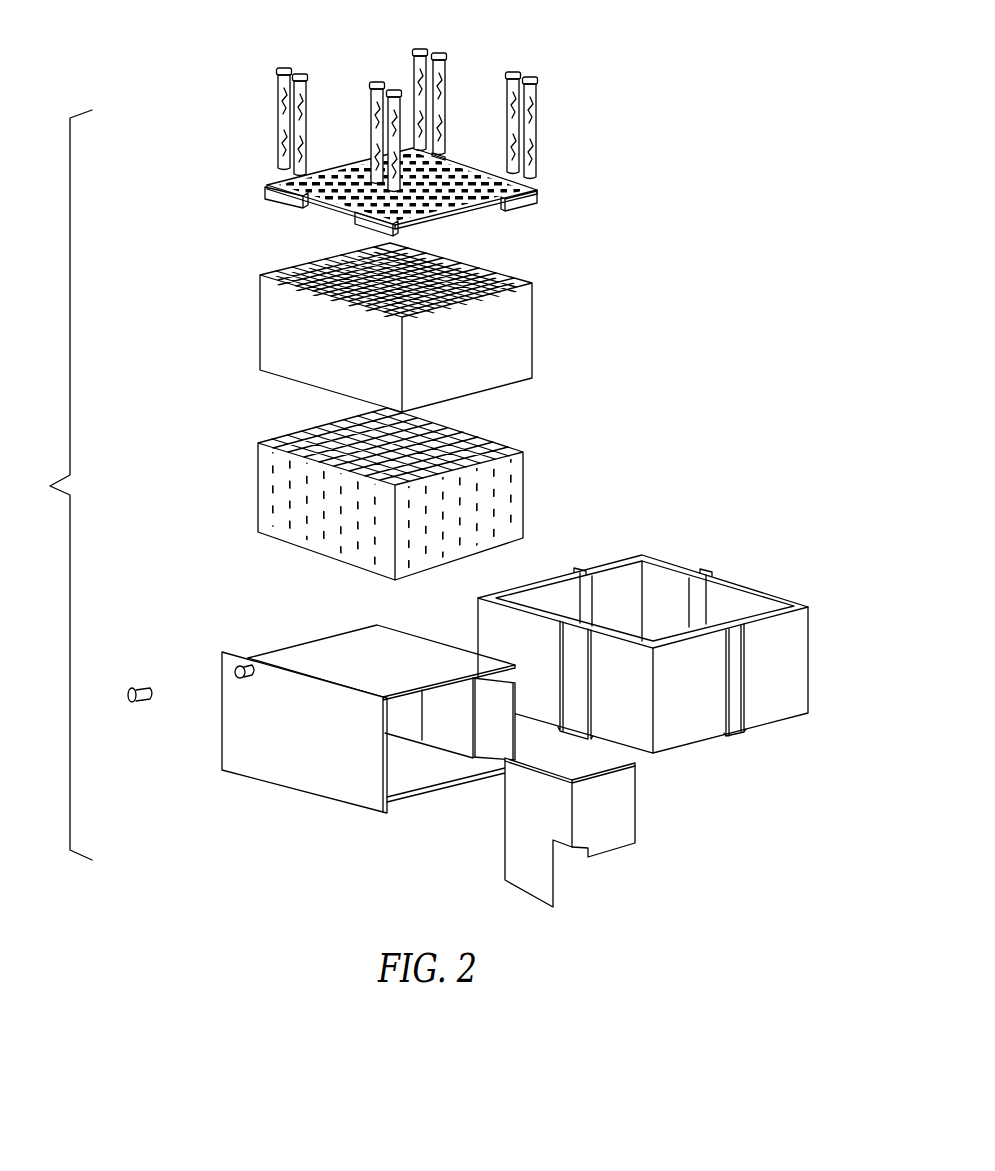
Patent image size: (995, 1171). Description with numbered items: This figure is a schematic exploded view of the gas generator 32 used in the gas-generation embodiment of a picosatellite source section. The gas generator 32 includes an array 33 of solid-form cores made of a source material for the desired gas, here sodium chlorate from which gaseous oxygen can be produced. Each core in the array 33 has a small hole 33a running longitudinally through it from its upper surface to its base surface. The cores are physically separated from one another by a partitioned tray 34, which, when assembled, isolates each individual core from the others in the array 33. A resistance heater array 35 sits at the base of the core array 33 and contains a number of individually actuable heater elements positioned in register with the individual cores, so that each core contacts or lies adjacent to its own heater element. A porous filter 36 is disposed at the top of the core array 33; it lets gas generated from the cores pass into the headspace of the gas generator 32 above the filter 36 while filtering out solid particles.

The gas generator 32 is at (58, 485).
The array of solid-form cores 33 is at (385, 493).
The small hole 33a is at (457, 455).
The partitioned tray 34 is at (260, 318).
The resistance heater array 35 is at (357, 625).
The porous filter 36 is at (268, 186).